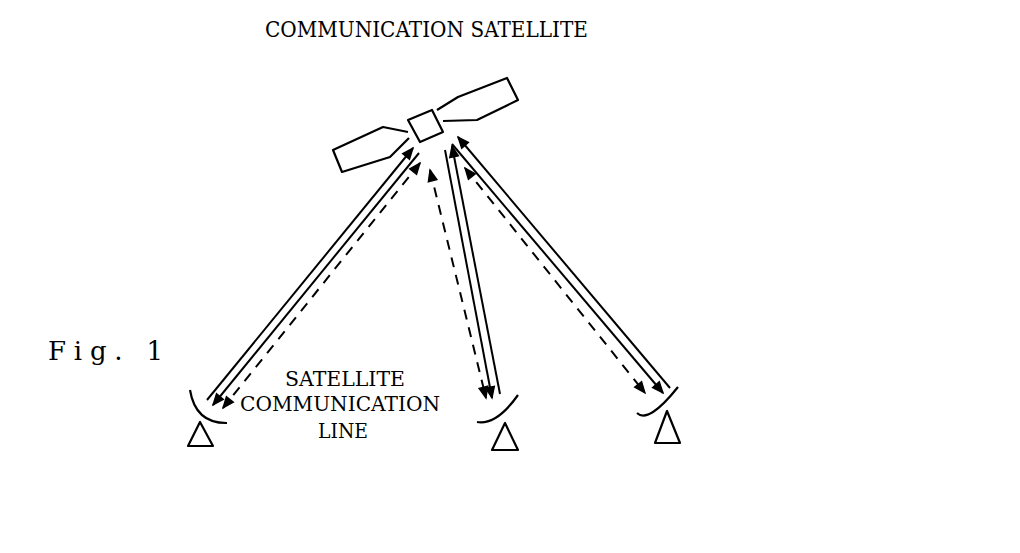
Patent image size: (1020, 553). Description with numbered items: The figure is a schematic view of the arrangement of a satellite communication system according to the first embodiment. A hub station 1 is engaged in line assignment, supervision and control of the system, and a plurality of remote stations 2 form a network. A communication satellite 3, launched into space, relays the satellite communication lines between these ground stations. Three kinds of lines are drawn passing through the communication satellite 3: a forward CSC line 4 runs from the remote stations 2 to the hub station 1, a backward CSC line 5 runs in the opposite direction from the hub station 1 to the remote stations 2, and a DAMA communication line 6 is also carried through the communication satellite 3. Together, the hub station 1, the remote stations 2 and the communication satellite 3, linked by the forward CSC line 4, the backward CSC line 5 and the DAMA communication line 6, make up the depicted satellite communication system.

The hub station 1 is at (200, 448).
The remote stations 2 is at (667, 452).
The communication satellite 3 is at (422, 112).
The forward CSC line 4 is at (270, 315).
The backward CSC line 5 is at (328, 252).
The DAMA communication line 6 is at (333, 275).